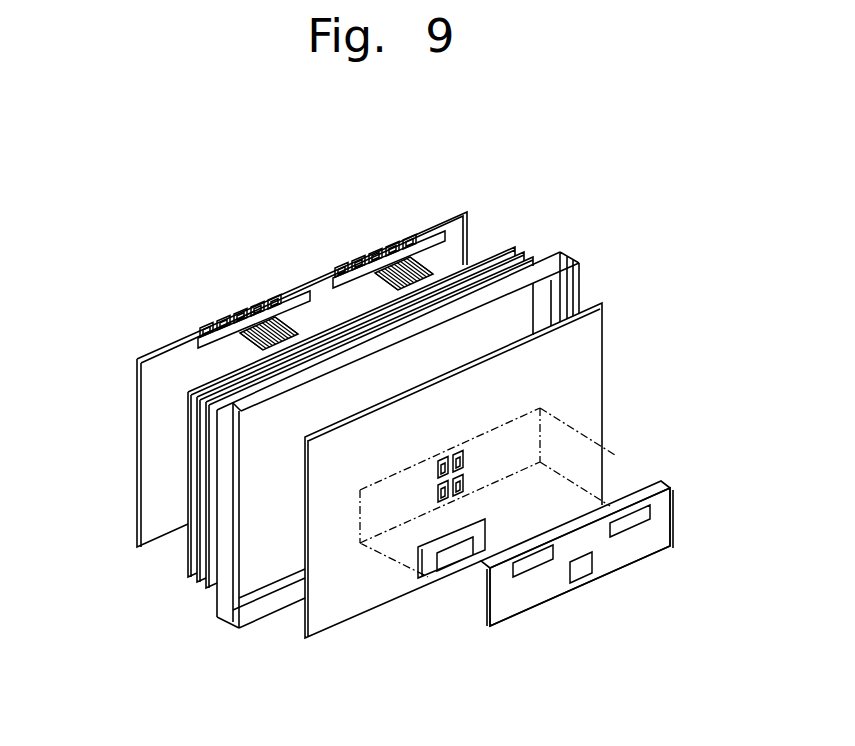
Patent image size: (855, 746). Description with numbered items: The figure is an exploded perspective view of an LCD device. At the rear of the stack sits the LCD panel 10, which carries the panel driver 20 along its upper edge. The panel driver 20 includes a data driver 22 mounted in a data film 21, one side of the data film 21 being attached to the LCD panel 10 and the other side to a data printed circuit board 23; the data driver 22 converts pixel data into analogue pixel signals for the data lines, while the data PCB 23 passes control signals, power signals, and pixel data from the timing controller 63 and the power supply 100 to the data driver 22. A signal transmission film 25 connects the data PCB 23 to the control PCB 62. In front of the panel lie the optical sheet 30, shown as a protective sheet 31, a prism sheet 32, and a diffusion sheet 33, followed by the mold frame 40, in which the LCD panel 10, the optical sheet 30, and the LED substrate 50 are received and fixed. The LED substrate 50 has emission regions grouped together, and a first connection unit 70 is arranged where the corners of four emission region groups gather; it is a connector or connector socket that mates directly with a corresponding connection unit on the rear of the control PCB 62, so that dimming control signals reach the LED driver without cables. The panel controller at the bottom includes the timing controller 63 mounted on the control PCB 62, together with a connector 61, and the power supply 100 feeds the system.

The LCD panel 10 is at (463, 214).
The panel driver 20 is at (401, 215).
The data film 21 is at (403, 237).
The data driver 22 is at (404, 233).
The data printed circuit board 23 is at (436, 233).
The signal transmission film 25 is at (380, 250).
The optical sheet 30 is at (413, 377).
The protective sheet 31 is at (515, 246).
The prism sheet 32 is at (523, 258).
The diffusion sheet 33 is at (530, 262).
The mold frame 40 is at (234, 410).
The LED substrate 50 is at (590, 329).
The connector 61 is at (650, 512).
The control PCB 62 is at (662, 524).
The timing controller 63 is at (583, 566).
The first connection unit 70 is at (463, 453).
The power supply 100 is at (448, 556).